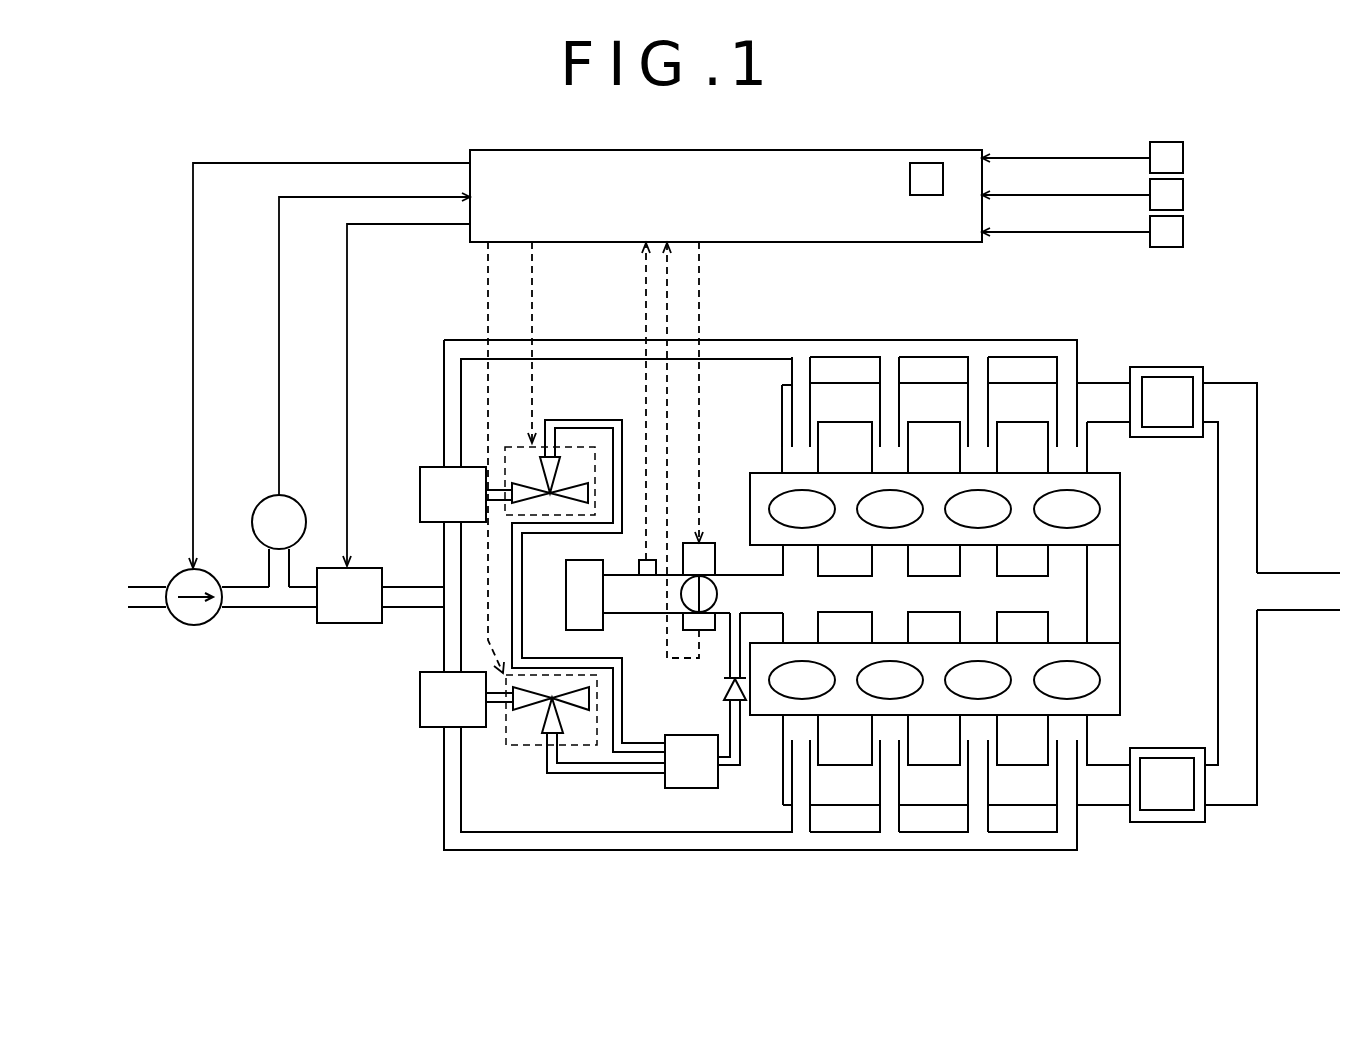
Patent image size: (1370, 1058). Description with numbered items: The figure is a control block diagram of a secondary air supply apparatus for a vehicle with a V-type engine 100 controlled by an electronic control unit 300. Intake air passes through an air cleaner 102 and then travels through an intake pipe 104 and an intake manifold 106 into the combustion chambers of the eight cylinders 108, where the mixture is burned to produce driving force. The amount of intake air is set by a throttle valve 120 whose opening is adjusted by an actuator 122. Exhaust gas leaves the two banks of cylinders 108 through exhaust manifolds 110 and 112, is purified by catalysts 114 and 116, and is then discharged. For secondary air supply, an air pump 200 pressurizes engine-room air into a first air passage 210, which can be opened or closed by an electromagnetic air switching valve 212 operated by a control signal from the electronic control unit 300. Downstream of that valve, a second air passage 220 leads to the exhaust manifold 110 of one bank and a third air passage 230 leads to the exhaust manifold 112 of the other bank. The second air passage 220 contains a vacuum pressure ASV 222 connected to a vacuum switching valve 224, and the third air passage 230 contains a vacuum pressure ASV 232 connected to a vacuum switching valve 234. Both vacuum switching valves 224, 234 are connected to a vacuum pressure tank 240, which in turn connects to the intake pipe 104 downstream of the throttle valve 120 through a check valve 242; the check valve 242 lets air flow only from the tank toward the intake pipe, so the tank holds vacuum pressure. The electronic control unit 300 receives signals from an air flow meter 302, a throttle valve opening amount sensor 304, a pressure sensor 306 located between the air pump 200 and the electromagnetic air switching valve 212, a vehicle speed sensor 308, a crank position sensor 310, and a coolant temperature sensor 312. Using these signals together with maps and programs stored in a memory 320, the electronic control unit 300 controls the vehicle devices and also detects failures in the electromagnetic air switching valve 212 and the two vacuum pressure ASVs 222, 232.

The engine 100 is at (978, 307).
The air cleaner 102 is at (565, 610).
The intake pipe 104 is at (634, 614).
The intake manifold 106 is at (1087, 595).
The cylinder 108 is at (825, 490).
The exhaust manifold 110 is at (767, 770).
The exhaust manifold 112 is at (767, 448).
The catalyst 114 is at (1167, 757).
The catalyst 116 is at (1167, 377).
The throttle valve 120 is at (738, 574).
The actuator 122 is at (690, 540).
The air pump 200 is at (190, 626).
The first air passage 210 is at (278, 608).
The electromagnetic air switching valve 212 is at (345, 624).
The second air passage 220 is at (830, 851).
The vacuum pressure ASV (1) 222 is at (420, 712).
The vacuum switching valve 224 is at (527, 746).
The third air passage 230 is at (836, 340).
The vacuum pressure ASV (2) 232 is at (420, 477).
The vacuum switching valve 234 is at (525, 447).
The vacuum pressure tank 240 is at (668, 786).
The check valve 242 is at (725, 690).
The electronic control unit 300 is at (795, 148).
The air flow meter 302 is at (638, 565).
The throttle valve opening amount sensor 304 is at (705, 632).
The pressure sensor 306 is at (293, 495).
The vehicle speed sensor 308 is at (1183, 157).
The crank position sensor 310 is at (1183, 193).
The coolant temperature sensor 312 is at (1183, 231).
The memory 320 is at (928, 162).